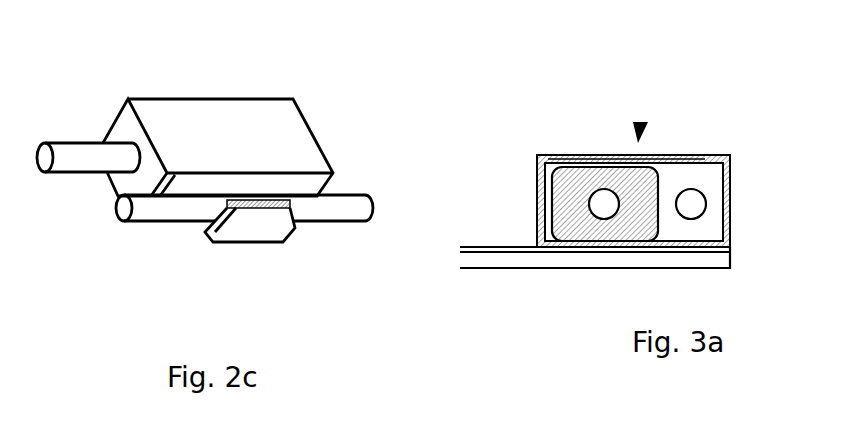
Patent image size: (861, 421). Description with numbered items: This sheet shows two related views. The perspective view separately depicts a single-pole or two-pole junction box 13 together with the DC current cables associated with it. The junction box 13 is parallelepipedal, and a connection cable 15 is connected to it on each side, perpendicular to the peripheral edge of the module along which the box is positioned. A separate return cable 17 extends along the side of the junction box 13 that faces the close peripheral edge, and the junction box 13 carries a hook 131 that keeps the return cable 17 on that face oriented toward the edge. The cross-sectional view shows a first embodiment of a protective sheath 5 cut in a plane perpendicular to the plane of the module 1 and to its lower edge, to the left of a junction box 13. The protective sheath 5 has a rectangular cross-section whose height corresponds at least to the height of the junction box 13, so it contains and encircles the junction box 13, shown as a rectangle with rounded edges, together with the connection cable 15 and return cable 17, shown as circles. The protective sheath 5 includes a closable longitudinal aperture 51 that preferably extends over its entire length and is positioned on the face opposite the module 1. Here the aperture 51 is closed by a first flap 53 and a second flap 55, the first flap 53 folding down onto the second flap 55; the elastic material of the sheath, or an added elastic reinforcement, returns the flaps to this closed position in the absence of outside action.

In FIG. 3A, the module 1 is at (475, 247).
In FIG. 3A, the protective sheath 5 is at (536, 205).
In FIG. 2C, the junction box 13 is at (155, 97).
In FIG. 3A, the junction box 13 is at (551, 250).
In FIG. 2C, the connection cable 15 is at (47, 141).
In FIG. 3A, the connection cable 15 is at (608, 221).
In FIG. 2C, the return cable 17 is at (110, 222).
In FIG. 3A, the return cable 17 is at (692, 221).
In FIG. 2C, the hook 131 is at (253, 246).
In FIG. 3A, the longitudinal aperture 51 is at (645, 120).
In FIG. 3A, the first flap 53 is at (598, 152).
In FIG. 3A, the second flap 55 is at (683, 157).